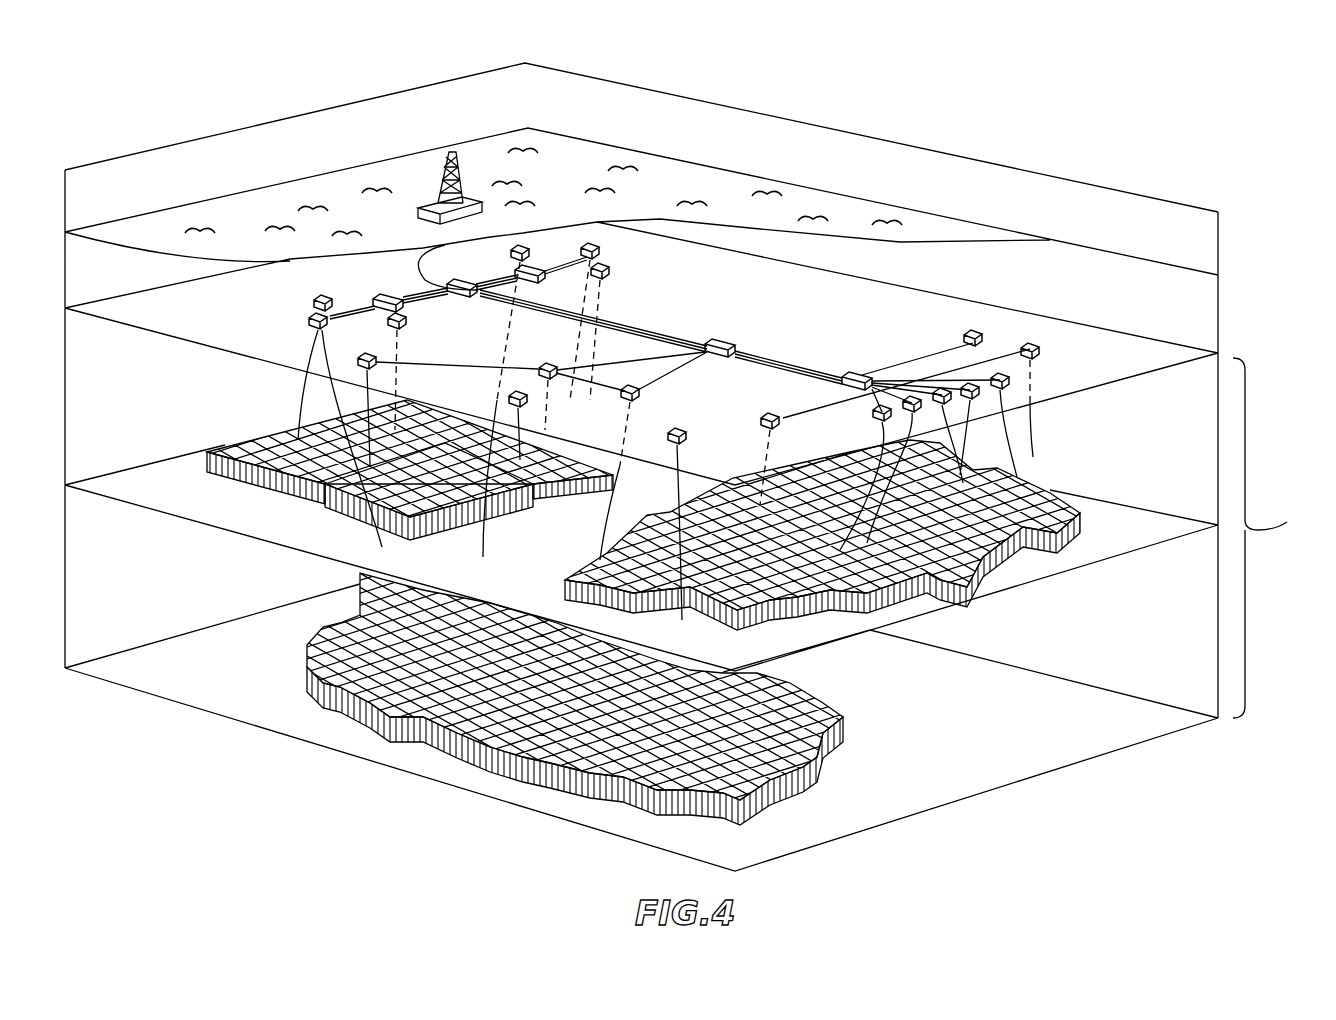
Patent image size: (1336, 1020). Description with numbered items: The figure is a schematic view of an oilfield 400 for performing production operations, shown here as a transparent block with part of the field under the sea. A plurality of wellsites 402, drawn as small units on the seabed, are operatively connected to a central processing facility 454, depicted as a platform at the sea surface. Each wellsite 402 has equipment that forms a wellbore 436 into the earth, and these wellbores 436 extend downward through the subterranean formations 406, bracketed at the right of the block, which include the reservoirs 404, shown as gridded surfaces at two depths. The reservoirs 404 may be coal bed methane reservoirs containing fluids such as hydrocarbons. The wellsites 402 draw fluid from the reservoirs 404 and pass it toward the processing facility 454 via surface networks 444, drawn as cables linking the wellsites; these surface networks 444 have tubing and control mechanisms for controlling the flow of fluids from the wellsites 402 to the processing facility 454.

The oilfield 400 is at (95, 113).
The wellsite 402 is at (785, 405).
The reservoir 404 is at (841, 773).
The subterranean formation 406 is at (1284, 538).
The wellbore 436 is at (1018, 481).
The surface network 444 is at (350, 322).
The central processing facility 454 is at (432, 173).